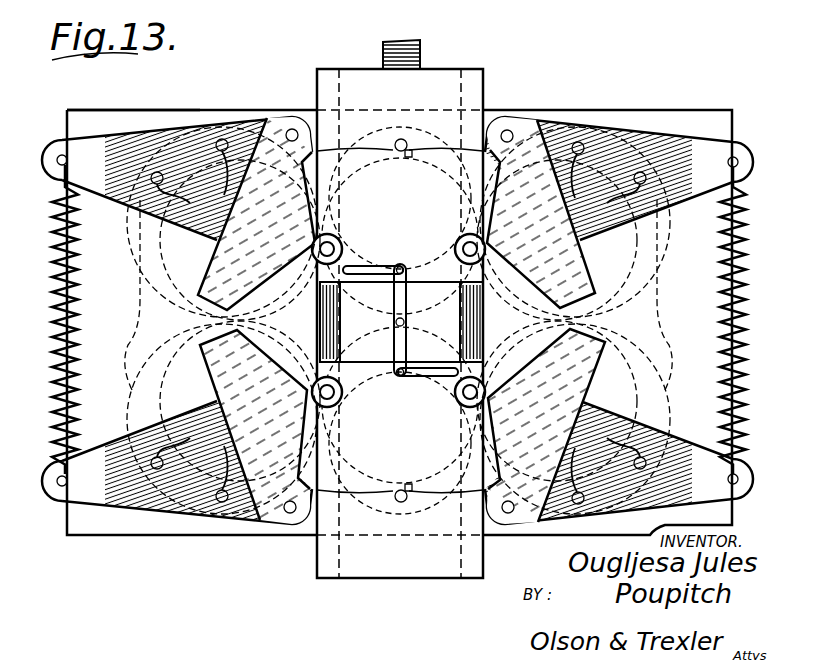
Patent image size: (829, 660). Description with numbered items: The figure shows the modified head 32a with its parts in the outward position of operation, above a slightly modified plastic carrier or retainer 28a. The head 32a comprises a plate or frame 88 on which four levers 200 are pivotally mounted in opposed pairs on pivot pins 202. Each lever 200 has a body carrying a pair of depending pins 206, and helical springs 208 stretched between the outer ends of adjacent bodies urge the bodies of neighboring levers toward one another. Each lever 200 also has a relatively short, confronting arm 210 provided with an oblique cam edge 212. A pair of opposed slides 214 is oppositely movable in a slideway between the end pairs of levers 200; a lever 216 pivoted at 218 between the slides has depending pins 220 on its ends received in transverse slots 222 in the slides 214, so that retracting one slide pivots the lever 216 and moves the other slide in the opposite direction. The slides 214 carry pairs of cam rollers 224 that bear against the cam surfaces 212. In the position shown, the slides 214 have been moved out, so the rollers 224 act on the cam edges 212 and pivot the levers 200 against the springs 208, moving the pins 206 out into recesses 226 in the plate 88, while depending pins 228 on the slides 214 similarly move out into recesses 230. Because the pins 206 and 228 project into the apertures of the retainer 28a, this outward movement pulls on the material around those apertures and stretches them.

The plastic carrier or retainer 28a is at (660, 288).
The head 32a is at (744, 113).
The plate or frame 88 is at (115, 110).
The lever 200 is at (265, 104).
The pivot pin 202 is at (293, 128).
The depending pin 206 is at (635, 462).
The helical spring 208 is at (72, 305).
The short confronting arm 210 is at (197, 273).
The oblique cam edge 212 is at (303, 292).
The slide 214 is at (476, 83).
The lever 216 is at (405, 330).
The pivot 218 is at (406, 305).
The depending pin 220 is at (420, 256).
The transverse slot 222 is at (370, 266).
The cam roller 224 is at (345, 240).
The recess 226 is at (227, 115).
The depending pin 228 is at (403, 140).
The recess 230 is at (401, 152).